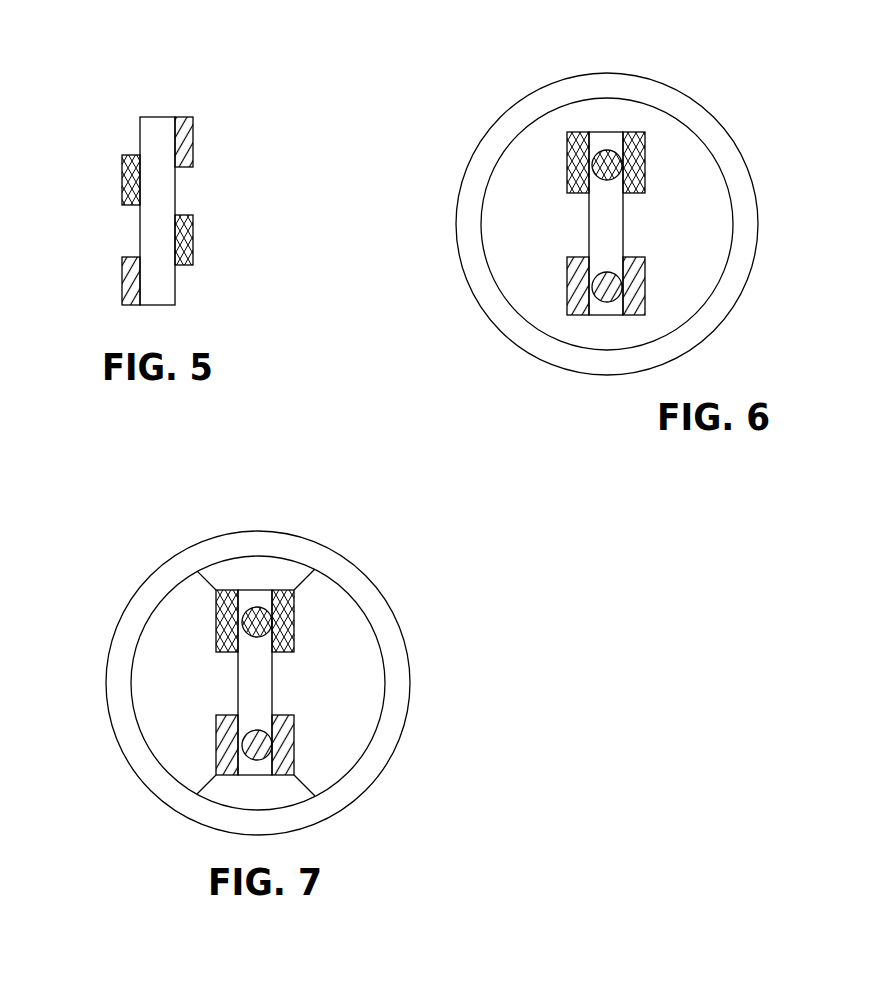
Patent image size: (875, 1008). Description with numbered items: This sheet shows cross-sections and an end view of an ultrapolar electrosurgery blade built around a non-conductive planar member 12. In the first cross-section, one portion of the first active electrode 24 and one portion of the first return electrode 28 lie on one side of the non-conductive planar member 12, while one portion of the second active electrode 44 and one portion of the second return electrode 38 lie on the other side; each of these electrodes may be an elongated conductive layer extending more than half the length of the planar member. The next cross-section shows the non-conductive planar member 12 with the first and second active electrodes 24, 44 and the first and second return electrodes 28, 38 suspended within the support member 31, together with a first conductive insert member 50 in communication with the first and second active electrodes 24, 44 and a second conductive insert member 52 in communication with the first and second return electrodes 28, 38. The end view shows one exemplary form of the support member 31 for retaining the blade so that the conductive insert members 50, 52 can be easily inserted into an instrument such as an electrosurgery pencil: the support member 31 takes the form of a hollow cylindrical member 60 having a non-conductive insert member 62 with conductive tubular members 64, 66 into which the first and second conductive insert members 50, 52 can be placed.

In FIG. 5, the non-conductive planar member 12 is at (168, 288).
In FIG. 6, the non-conductive planar member 12 is at (608, 228).
In FIG. 7, the non-conductive planar member 12 is at (255, 682).
In FIG. 5, the first active electrode 24 is at (122, 178).
In FIG. 6, the first active electrode 24 is at (567, 157).
In FIG. 7, the first active electrode 24 is at (217, 615).
In FIG. 5, the first return electrode 28 is at (122, 258).
In FIG. 6, the first return electrode 28 is at (567, 283).
In FIG. 7, the first return electrode 28 is at (217, 738).
In FIG. 6, the support member 31 is at (458, 222).
In FIG. 7, the support member 31 is at (247, 527).
In FIG. 5, the second return electrode 38 is at (194, 122).
In FIG. 6, the second return electrode 38 is at (645, 280).
In FIG. 7, the second return electrode 38 is at (295, 737).
In FIG. 5, the second active electrode 44 is at (194, 218).
In FIG. 6, the second active electrode 44 is at (640, 153).
In FIG. 7, the second active electrode 44 is at (296, 614).
In FIG. 6, the first conductive insert member 50 is at (603, 150).
In FIG. 6, the second conductive insert member 52 is at (608, 298).
In FIG. 7, the hollow cylindrical member 60 is at (391, 707).
In FIG. 7, the non-conductive insert member 62 is at (276, 577).
In FIG. 7, the conductive tubular member 64 is at (257, 637).
In FIG. 7, the conductive tubular member 66 is at (257, 732).